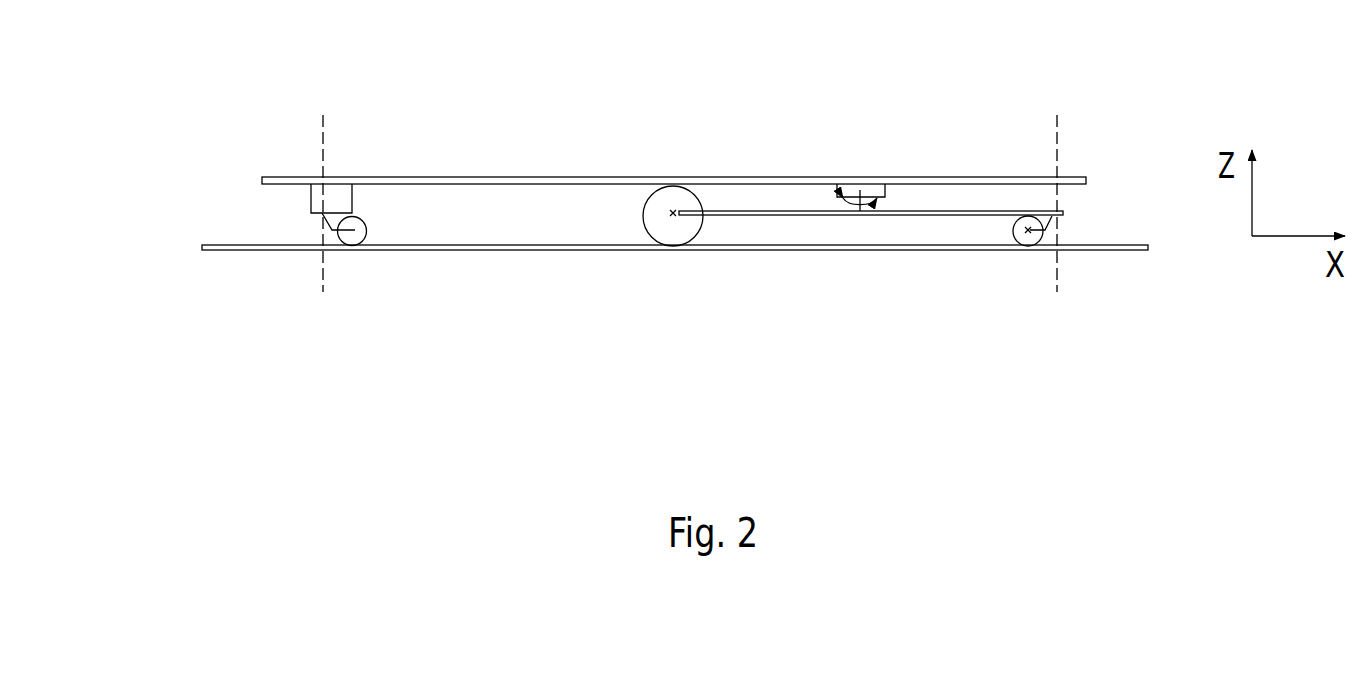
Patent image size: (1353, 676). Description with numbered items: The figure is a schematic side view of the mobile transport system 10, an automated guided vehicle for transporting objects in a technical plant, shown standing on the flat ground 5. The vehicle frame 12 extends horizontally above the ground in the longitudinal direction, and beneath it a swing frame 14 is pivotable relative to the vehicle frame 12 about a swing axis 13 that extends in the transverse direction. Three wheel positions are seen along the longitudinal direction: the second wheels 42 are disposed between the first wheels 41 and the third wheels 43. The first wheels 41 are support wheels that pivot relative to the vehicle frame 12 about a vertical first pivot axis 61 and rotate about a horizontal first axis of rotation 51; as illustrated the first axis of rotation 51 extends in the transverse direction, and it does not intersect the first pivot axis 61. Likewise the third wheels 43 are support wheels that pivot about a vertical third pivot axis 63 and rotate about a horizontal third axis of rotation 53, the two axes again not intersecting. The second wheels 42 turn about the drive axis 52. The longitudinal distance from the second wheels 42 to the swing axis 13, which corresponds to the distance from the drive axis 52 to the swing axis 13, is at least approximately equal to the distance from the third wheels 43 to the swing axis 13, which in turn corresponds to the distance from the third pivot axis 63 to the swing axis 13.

The mobile transport system 10 is at (200, 180).
The flat ground 5 is at (513, 243).
The vehicle frame 12 is at (958, 180).
The swing axis 13 is at (860, 190).
The swing frame 14 is at (803, 212).
The first wheels 41 is at (355, 237).
The second wheels 42 is at (683, 229).
The third wheels 43 is at (1032, 238).
The first axis of rotation 51 is at (354, 228).
The drive axis 52 is at (674, 212).
The third axis of rotation 53 is at (1020, 246).
The first pivot axis 61 is at (320, 138).
The third pivot axis 63 is at (1058, 143).